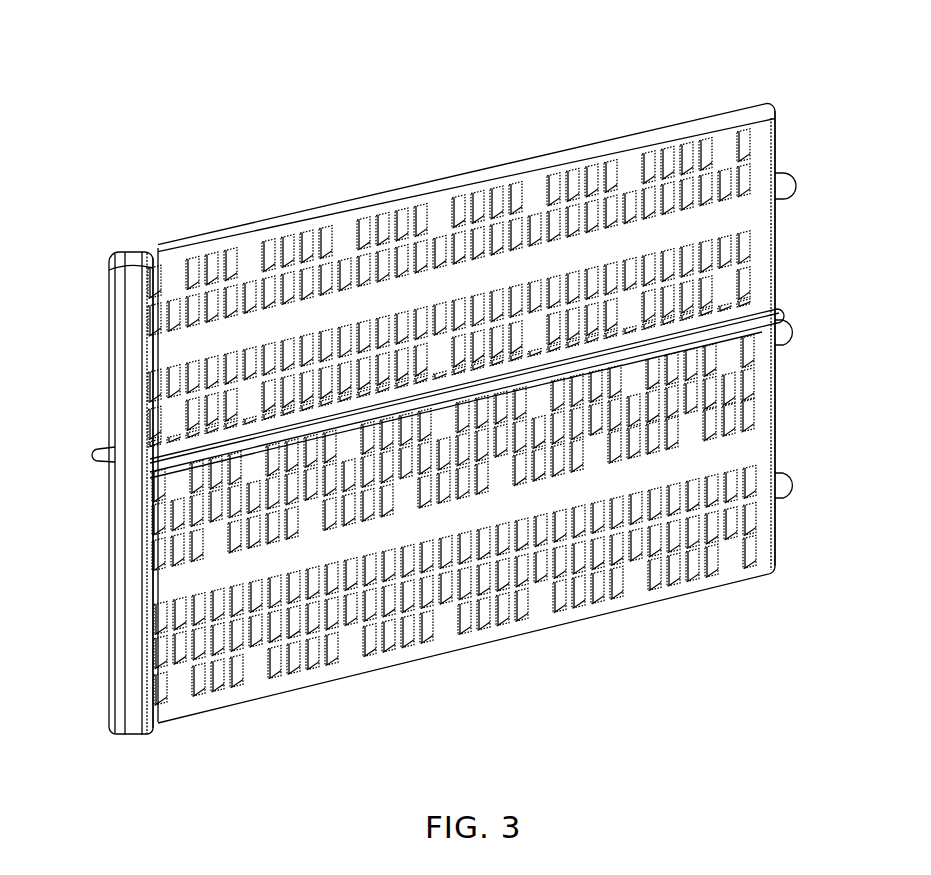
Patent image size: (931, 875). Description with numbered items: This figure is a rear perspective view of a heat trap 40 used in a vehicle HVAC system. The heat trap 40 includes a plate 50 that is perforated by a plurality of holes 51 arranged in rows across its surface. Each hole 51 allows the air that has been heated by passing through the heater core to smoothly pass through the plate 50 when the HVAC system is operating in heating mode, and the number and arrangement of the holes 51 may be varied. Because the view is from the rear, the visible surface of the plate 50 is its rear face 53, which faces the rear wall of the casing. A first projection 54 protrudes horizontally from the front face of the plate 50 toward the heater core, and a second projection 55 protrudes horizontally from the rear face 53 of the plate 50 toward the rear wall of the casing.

The heat trap 40 is at (243, 96).
The plate 50 is at (203, 192).
The holes 51 is at (418, 213).
The rear face 53 is at (745, 212).
The first projection 54 is at (93, 458).
The second projection 55 is at (779, 317).